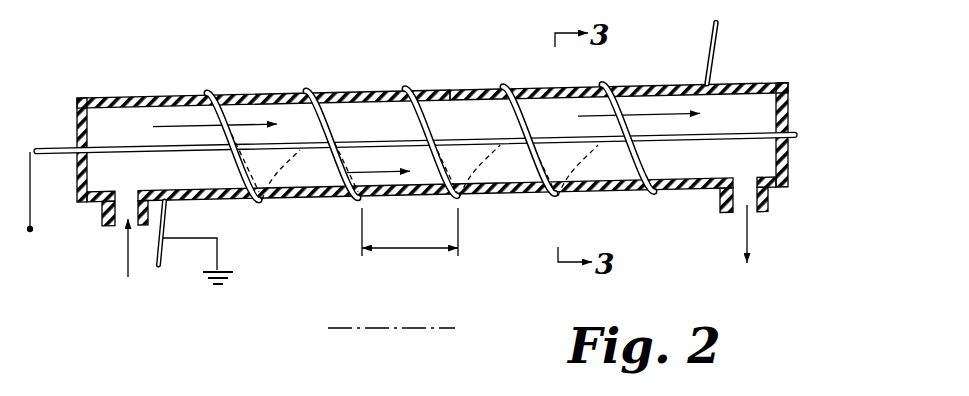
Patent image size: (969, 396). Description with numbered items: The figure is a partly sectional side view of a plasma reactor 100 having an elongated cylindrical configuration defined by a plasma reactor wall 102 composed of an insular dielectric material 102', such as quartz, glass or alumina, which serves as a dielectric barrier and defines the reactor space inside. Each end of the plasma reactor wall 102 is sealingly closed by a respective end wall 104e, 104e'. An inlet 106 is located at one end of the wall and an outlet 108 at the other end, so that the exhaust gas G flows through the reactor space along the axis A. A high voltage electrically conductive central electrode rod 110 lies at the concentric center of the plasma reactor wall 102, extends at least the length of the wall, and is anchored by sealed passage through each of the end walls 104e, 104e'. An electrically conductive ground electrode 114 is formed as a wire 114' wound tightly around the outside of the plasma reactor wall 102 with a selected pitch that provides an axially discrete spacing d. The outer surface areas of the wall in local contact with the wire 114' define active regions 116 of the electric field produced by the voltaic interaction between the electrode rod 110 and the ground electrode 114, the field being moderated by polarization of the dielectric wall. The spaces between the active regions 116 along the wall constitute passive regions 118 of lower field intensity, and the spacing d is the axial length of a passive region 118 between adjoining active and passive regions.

The plasma reactor 100 is at (431, 101).
The plasma reactor wall 102 is at (263, 60).
The insular dielectric material 102' is at (617, 68).
The end wall 104e is at (63, 127).
The end wall 104e' is at (807, 106).
The inlet 106 is at (104, 245).
The outlet 108 is at (784, 224).
The central electrode rod 110 is at (441, 150).
The ground electrode 114 is at (332, 106).
The wire 114' is at (609, 97).
The active region 116 is at (437, 184).
The passive region 118 is at (443, 142).
The exhaust gas G is at (450, 182).
The axially discrete spacing d is at (410, 258).
The axis A is at (390, 346).